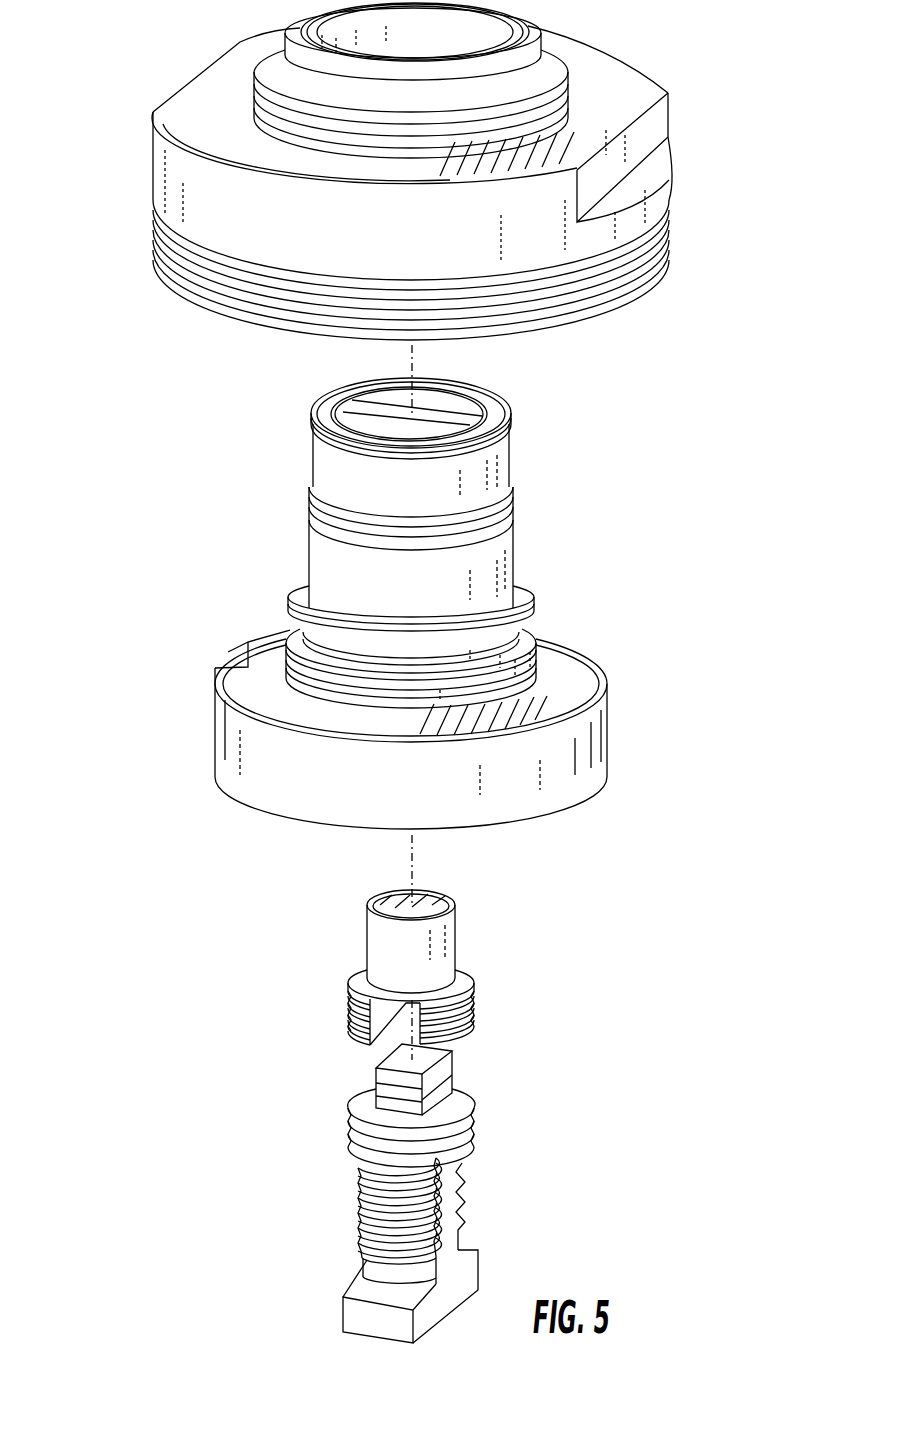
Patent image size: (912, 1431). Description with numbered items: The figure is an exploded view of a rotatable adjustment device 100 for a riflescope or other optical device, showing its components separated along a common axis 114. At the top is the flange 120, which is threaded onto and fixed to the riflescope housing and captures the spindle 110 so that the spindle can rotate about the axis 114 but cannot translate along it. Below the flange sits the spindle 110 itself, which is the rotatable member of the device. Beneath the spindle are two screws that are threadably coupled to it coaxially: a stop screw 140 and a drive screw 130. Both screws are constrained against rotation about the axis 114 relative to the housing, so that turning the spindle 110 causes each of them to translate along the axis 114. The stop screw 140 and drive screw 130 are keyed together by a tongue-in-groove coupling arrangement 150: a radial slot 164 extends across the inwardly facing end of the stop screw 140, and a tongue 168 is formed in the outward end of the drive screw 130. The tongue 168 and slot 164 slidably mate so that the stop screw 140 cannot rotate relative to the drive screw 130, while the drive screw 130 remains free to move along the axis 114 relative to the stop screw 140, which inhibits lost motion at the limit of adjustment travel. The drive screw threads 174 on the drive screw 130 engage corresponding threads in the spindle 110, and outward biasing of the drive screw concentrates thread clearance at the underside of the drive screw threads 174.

The rotatable adjustment device 100 is at (158, 4).
The flange 120 is at (698, 124).
The spindle 110 is at (598, 568).
The axis 114 is at (413, 858).
The stop screw 140 is at (512, 954).
The tongue-in-groove coupling arrangement 150 is at (305, 1084).
The radial slot 164 is at (378, 1037).
The tongue 168 is at (437, 1073).
The drive screw threads 174 is at (350, 1137).
The drive screw 130 is at (530, 1183).